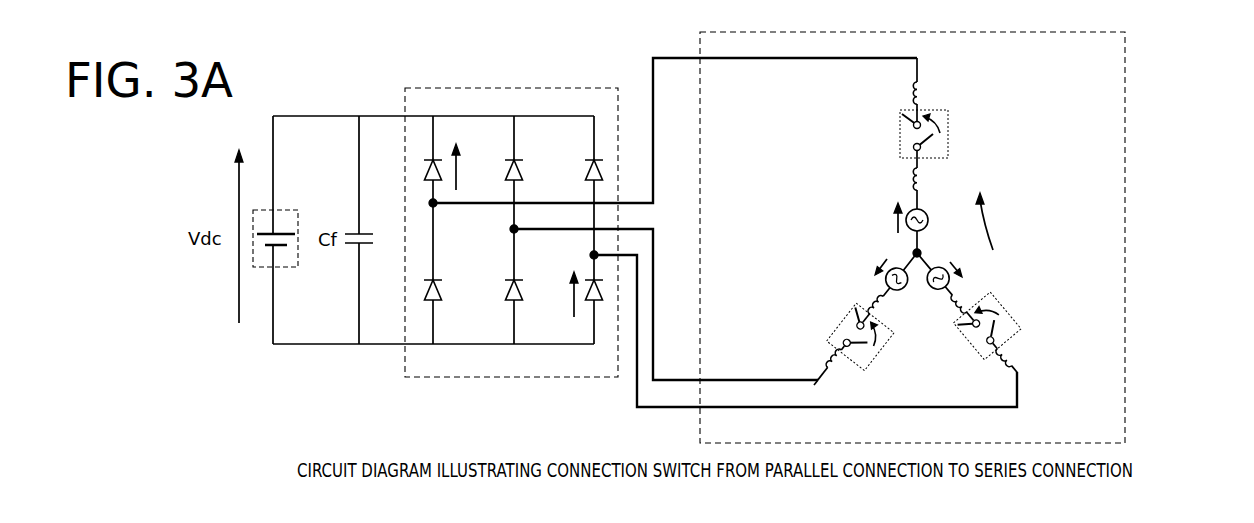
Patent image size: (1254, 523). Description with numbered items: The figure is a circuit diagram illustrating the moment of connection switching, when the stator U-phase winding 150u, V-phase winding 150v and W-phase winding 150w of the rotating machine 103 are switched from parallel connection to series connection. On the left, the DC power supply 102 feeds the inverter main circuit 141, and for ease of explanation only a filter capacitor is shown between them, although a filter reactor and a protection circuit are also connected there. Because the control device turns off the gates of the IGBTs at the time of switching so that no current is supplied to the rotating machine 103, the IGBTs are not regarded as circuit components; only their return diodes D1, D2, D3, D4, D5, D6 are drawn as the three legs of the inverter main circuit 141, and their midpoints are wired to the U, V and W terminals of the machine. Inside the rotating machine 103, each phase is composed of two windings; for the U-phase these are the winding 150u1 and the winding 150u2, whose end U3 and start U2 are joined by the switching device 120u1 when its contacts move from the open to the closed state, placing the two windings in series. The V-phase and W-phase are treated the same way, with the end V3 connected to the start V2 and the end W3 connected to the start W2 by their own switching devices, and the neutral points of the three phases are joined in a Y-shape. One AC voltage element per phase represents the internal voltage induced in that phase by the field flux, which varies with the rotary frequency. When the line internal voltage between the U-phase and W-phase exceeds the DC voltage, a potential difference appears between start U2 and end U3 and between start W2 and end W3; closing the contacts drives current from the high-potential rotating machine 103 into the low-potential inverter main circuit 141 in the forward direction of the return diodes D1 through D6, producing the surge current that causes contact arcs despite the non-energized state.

The DC power supply 102 is at (282, 210).
The inverter main circuit 141 is at (495, 208).
The rotating machine 103 is at (1125, 63).
The stator U-phase winding 150u is at (920, 62).
The U-phase winding 150u1 is at (925, 92).
The switching device 120u1 is at (948, 132).
The U-phase winding 150u2 is at (925, 177).
The V-phase winding 150v is at (826, 378).
The W-phase winding 150w is at (1011, 377).
The return diode D1 is at (425, 162).
The return diode D2 is at (425, 283).
The return diode D3 is at (506, 164).
The return diode D4 is at (506, 284).
The return diode D5 is at (586, 164).
The return diode D6 is at (588, 280).
The start U2 is at (899, 154).
The end U3 is at (899, 118).
The start V2 is at (863, 326).
The end V3 is at (852, 339).
The start W2 is at (982, 325).
The end W3 is at (995, 338).